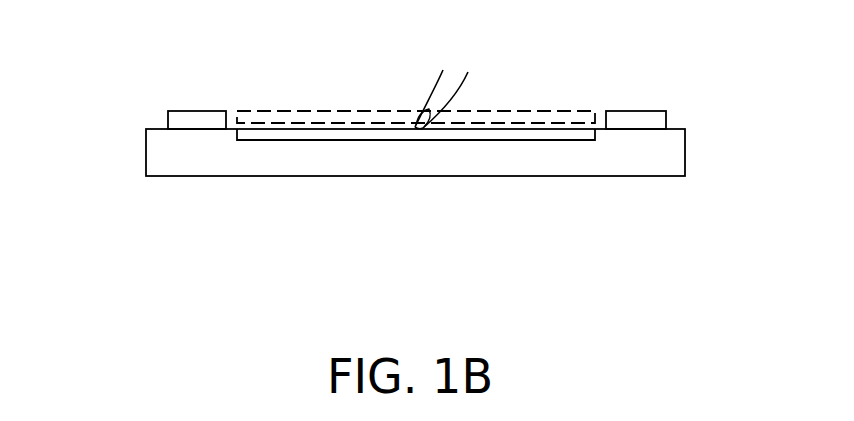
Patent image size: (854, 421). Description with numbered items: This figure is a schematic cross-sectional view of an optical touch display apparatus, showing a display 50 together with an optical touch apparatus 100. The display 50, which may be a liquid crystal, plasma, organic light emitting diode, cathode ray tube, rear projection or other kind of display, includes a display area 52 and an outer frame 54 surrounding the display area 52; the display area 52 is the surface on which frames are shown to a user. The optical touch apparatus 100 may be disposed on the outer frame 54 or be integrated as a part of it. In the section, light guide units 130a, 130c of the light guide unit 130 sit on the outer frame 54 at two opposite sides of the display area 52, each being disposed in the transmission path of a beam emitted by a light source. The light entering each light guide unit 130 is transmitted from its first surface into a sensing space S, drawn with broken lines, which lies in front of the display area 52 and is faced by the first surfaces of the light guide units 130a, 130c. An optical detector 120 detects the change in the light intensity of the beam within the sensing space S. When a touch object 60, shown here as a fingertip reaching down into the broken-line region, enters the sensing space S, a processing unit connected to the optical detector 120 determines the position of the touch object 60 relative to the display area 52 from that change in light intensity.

The optical touch apparatus 100 is at (733, 261).
The optical detector 120 is at (684, 105).
The light guide unit 130 is at (389, 73).
The light guide unit 130a is at (200, 120).
The light guide unit 130c is at (634, 122).
The sensing space S is at (310, 110).
The touch object 60 is at (450, 83).
The display 50 is at (262, 237).
The display area 52 is at (260, 133).
The outer frame 54 is at (196, 149).